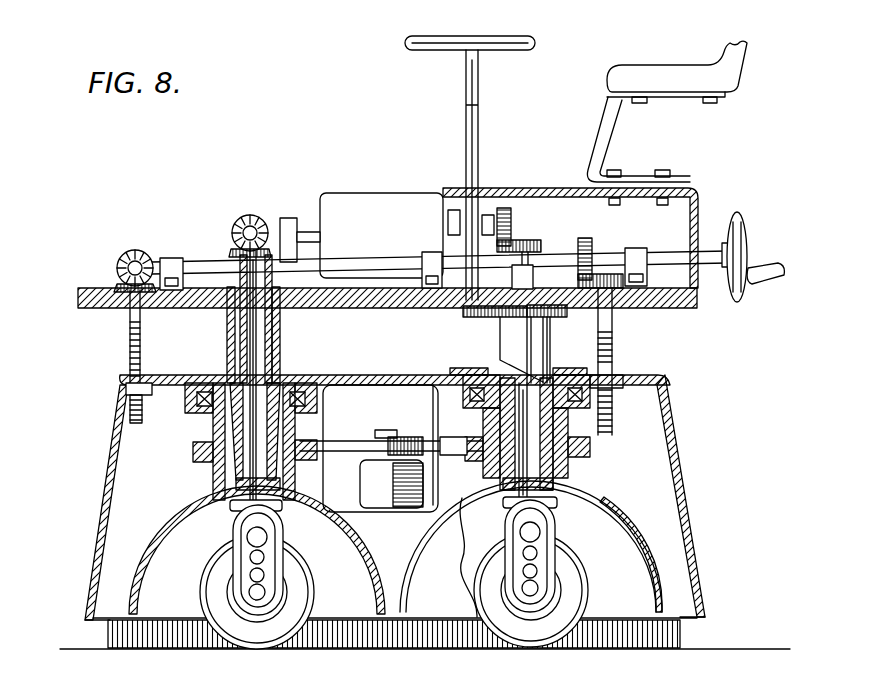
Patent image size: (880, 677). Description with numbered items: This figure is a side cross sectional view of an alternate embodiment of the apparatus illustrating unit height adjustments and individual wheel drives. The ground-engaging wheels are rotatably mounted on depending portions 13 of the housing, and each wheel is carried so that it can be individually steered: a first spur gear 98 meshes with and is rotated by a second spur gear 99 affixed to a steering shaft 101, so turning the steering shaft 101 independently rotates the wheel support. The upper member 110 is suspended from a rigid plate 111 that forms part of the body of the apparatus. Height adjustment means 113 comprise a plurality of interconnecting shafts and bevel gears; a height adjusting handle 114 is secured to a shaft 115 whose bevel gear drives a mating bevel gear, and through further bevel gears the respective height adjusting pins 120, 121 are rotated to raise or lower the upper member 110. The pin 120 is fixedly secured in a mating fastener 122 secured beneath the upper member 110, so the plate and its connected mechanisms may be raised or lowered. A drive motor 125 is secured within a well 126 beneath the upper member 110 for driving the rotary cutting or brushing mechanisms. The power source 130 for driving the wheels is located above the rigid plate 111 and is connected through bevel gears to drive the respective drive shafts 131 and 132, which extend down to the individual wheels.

The depending portions 13 is at (612, 380).
The first spur gear 98 is at (562, 314).
The second spur gear 99 is at (463, 311).
The steering shaft 101 is at (481, 156).
The upper member 110 is at (150, 377).
The rigid plate 111 is at (78, 300).
The height adjustment means 113 is at (208, 232).
The height adjusting handle 114 is at (745, 215).
The shaft 115 is at (712, 265).
The height adjusting pin 120 is at (130, 340).
The height adjusting pin 121 is at (612, 349).
The mating fastener 122 is at (128, 390).
The drive motor 125 is at (392, 499).
The well 126 is at (340, 408).
The power source for driving the wheels 130 is at (408, 237).
The drive shaft 131 is at (262, 326).
The drive shaft 132 is at (560, 455).